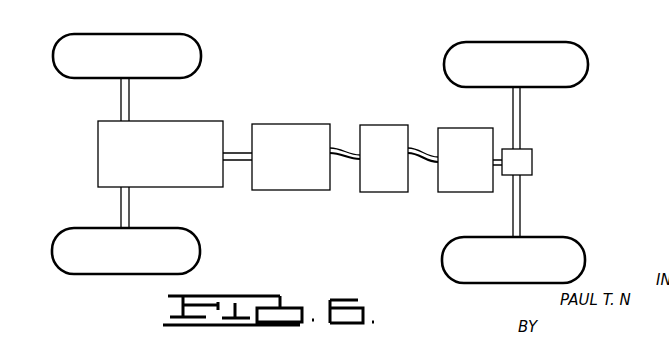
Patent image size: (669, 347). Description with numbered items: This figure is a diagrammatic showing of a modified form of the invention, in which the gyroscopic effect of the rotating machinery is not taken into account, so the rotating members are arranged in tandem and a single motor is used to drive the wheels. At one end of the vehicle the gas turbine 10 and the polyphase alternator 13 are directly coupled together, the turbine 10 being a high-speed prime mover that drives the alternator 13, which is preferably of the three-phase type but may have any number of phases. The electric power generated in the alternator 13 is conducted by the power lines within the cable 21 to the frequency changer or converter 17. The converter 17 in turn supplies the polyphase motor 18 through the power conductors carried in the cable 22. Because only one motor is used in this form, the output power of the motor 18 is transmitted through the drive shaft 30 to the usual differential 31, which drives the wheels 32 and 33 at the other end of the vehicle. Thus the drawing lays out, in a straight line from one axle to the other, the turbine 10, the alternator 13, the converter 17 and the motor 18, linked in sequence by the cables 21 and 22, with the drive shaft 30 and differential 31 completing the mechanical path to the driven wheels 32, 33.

The gas turbine 10 is at (163, 131).
The polyphase alternator 13 is at (273, 132).
The frequency changer or converter 17 is at (373, 135).
The polyphase motor 18 is at (482, 108).
The cable 21 is at (348, 160).
The cable 22 is at (422, 162).
The drive shaft 30 is at (493, 162).
The differential 31 is at (525, 158).
The wheel 32 is at (575, 55).
The wheel 33 is at (562, 246).